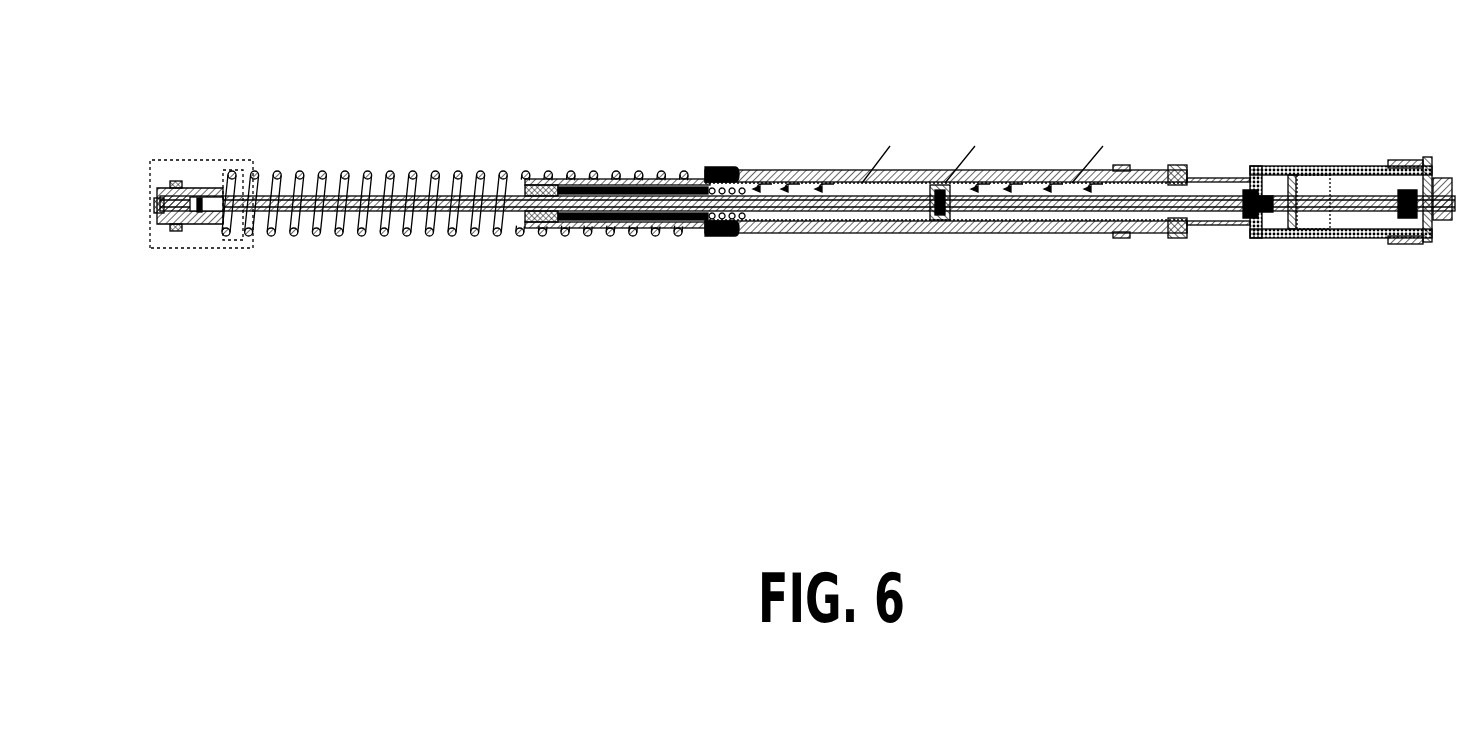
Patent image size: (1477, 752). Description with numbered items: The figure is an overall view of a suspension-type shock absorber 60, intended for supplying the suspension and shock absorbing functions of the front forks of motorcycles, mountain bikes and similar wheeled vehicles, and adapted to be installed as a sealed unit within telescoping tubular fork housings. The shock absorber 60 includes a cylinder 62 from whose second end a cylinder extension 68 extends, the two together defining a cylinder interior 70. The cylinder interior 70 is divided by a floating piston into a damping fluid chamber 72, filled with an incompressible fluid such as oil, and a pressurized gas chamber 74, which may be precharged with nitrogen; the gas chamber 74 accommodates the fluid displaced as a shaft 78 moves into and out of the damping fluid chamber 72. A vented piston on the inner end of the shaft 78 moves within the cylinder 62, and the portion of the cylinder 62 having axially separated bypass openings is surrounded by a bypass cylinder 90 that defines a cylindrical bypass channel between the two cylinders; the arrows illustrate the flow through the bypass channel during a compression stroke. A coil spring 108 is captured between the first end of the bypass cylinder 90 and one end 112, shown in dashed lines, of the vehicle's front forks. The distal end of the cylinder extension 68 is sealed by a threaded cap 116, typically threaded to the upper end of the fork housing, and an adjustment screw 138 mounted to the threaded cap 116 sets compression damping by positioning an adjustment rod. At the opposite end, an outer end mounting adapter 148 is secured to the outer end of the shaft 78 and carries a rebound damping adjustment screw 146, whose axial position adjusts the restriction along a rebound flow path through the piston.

The shock absorber 60 is at (862, 66).
The cylinder 62 is at (613, 238).
The cylinder extension 68 is at (1303, 168).
The cylinder interior 70 is at (1002, 210).
The damping fluid chamber 72 is at (1129, 211).
The pressurized gas chamber 74 is at (1364, 193).
The shaft 78 is at (435, 237).
The bypass cylinder 90 is at (767, 172).
The coil spring 108 is at (335, 237).
The end of the front forks 112 is at (206, 250).
The threaded cap 116 is at (1427, 165).
The adjustment screw 138 is at (1448, 260).
The rebound damping adjustment screw 146 is at (158, 212).
The outer end mounting adapter 148 is at (191, 187).